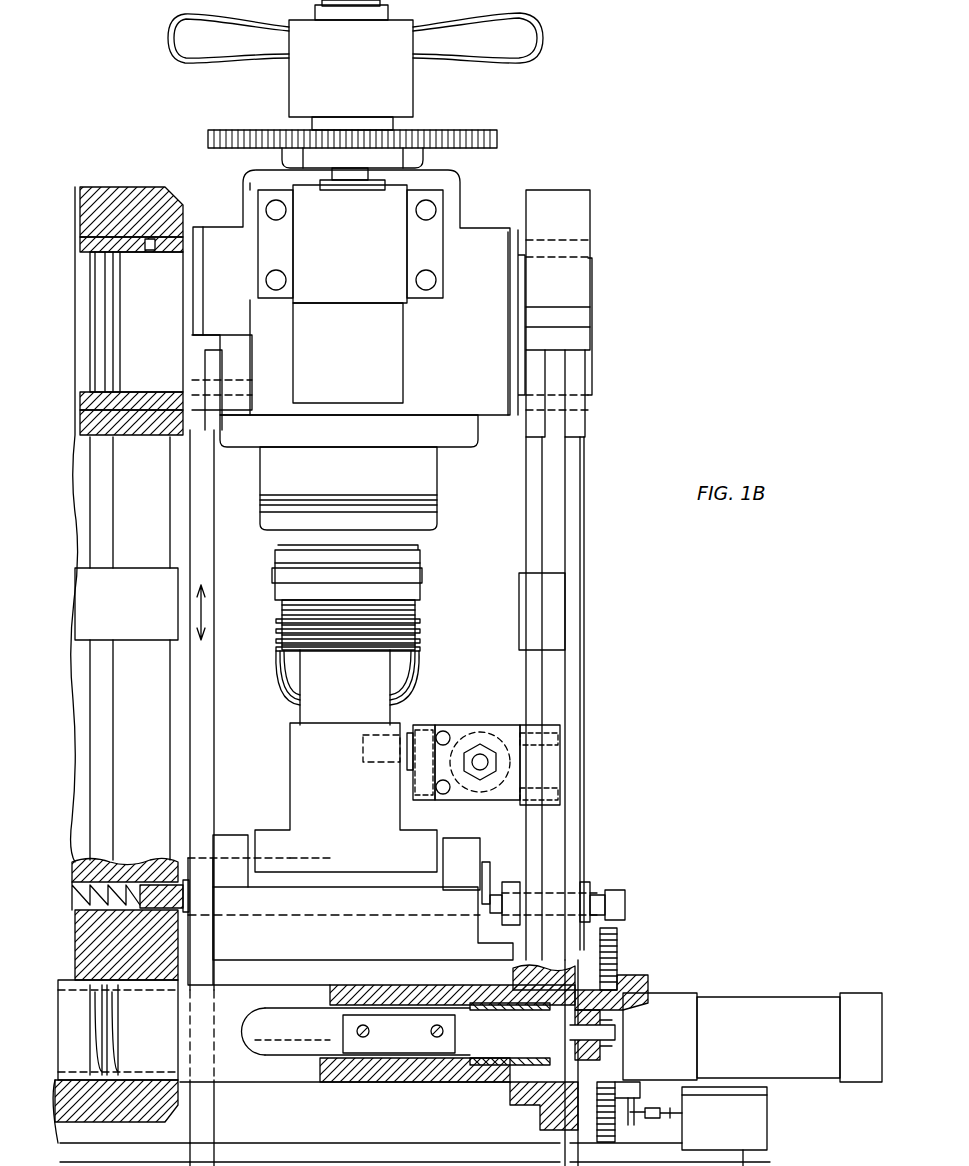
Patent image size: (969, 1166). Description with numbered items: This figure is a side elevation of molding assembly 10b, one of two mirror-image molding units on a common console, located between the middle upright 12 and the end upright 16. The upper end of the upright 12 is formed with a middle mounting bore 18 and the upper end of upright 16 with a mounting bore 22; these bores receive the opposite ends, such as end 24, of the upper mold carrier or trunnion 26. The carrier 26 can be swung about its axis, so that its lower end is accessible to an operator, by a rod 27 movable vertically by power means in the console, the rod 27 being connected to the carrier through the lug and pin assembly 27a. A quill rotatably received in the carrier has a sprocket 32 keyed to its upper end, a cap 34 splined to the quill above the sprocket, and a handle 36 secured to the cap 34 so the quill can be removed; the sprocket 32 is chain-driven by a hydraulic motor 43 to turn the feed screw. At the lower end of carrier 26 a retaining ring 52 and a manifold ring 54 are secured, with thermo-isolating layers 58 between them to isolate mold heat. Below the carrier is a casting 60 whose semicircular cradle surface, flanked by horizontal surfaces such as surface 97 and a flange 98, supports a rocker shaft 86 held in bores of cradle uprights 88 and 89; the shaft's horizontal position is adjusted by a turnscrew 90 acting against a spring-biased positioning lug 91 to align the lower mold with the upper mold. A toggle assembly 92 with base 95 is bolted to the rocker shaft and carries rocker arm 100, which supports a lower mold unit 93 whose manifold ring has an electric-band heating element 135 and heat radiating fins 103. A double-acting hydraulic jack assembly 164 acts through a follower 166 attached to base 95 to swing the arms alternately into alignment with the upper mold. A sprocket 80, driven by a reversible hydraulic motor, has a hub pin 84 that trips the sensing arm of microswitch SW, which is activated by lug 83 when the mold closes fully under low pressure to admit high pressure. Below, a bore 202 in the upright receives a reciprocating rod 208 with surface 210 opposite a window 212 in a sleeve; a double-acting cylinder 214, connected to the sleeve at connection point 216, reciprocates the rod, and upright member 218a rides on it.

The molding assembly 10b is at (570, 141).
The middle standard or upright 12 is at (96, 620).
The end upright 16 is at (575, 620).
The middle mounting bore 18 is at (82, 252).
The mounting bore 22 is at (568, 240).
The end of upper mold carrier 24 is at (590, 307).
The upper mold carrier or trunnion 26 is at (224, 250).
The rod 27 is at (190, 670).
The lug and pin assembly 27a is at (258, 348).
The sprocket 32 is at (250, 132).
The cap 34 is at (310, 75).
The handle 36 is at (185, 40).
The hydraulic motor 43 is at (350, 294).
The retaining ring 52 is at (415, 472).
The manifold ring 54 is at (420, 518).
The thermo-isolating layers 58 is at (263, 500).
The casting 60 is at (350, 921).
The sprocket 80 is at (618, 962).
The lug 83 is at (630, 1112).
The pin 84 is at (652, 1115).
The rocker shaft 86 is at (490, 880).
The cradle upright 88 is at (232, 848).
The cradle upright 89 is at (462, 846).
The turnscrew 90 is at (614, 893).
The spring-biased positioning lug 91 is at (160, 882).
The toggle assembly 92 is at (300, 763).
The lower mold unit 93 is at (420, 562).
The base 95 is at (361, 774).
The horizontal surface 97 is at (378, 895).
The flange 98 is at (290, 856).
The rocker arm 100 is at (347, 687).
The heat radiating fins 103 is at (403, 628).
The electric-band heating element 135 is at (420, 580).
The double-acting hydraulic jack assembly 164 is at (493, 729).
The follower 166 is at (422, 738).
The bore 202 is at (522, 1125).
The reciprocating rod 208 is at (377, 1033).
The surface 210 is at (399, 1034).
The window 212 is at (268, 1050).
The double-acting cylinder 214 is at (752, 1037).
The connection point 216 is at (618, 1012).
The pins 218a is at (436, 1040).
The microswitch / electrical limit switch SW is at (480, 1124).